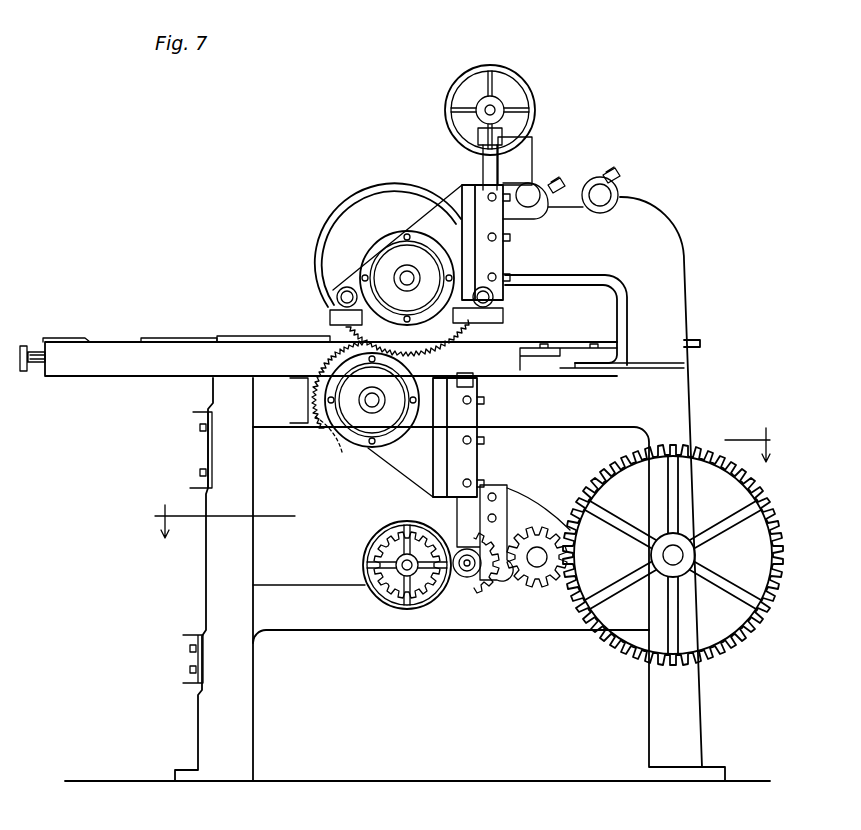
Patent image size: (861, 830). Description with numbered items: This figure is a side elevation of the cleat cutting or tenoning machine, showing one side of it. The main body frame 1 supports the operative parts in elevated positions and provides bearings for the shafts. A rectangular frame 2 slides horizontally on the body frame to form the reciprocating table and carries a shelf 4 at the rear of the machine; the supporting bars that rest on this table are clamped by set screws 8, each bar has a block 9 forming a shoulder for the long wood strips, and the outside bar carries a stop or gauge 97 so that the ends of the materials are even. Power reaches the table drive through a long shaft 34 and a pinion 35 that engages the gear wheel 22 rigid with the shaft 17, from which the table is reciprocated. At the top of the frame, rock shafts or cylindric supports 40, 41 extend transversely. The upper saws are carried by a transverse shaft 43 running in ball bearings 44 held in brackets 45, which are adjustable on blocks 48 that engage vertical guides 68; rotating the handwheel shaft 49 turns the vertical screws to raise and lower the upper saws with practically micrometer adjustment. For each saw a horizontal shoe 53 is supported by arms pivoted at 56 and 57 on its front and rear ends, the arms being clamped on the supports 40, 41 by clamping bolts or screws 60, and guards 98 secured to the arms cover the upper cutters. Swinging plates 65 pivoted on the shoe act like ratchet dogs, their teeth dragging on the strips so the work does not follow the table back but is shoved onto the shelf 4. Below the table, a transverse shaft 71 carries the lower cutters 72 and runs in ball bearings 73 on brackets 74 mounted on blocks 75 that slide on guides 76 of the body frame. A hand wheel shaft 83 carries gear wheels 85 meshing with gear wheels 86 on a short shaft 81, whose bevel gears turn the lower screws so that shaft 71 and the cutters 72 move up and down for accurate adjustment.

The main body frame 1 is at (212, 578).
The rectangular frame 2 is at (114, 374).
The shelf 4 is at (590, 347).
The set screws 8 is at (30, 345).
The block 9 is at (175, 340).
The stop or gauge 97 is at (275, 338).
The shaft 17 is at (677, 556).
The gear wheel 22 is at (622, 647).
The long shaft 34 is at (540, 548).
The pinion 35 is at (533, 578).
The rock shaft or cylindric support 40 is at (612, 196).
The rock shaft or cylindric support 41 is at (530, 192).
The transverse shaft 43 is at (368, 250).
The ball bearings 44 is at (404, 276).
The brackets 45 is at (470, 242).
The blocks 48 is at (490, 222).
The handwheel shaft 49 is at (500, 106).
The shoe 53 is at (500, 318).
The pivot 56 is at (338, 296).
The pivot 57 is at (496, 298).
The clamping bolts or screws 60 is at (608, 173).
The plates 65 is at (460, 328).
The vertical guides 68 is at (484, 163).
The transverse shaft 71 is at (368, 402).
The cutters 72 is at (353, 456).
The ball bearings 73 is at (350, 422).
The brackets 74 is at (403, 465).
The blocks 75 is at (455, 468).
The guides 76 is at (474, 381).
The short shaft 81 is at (465, 578).
The hand wheel shaft 83 is at (403, 560).
The gear wheels 85 is at (370, 548).
The gear wheels 86 is at (487, 577).
The guards 98 is at (357, 220).